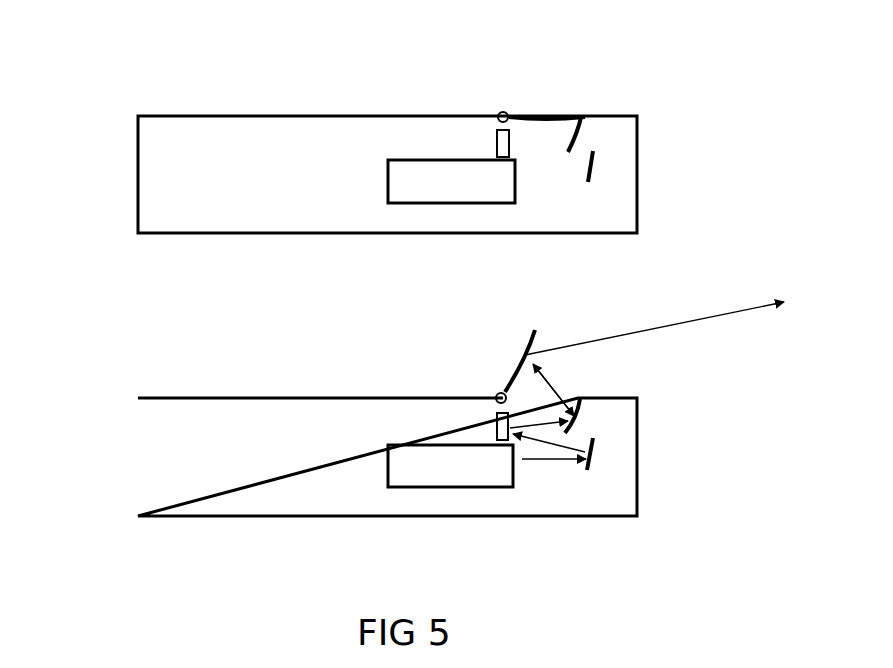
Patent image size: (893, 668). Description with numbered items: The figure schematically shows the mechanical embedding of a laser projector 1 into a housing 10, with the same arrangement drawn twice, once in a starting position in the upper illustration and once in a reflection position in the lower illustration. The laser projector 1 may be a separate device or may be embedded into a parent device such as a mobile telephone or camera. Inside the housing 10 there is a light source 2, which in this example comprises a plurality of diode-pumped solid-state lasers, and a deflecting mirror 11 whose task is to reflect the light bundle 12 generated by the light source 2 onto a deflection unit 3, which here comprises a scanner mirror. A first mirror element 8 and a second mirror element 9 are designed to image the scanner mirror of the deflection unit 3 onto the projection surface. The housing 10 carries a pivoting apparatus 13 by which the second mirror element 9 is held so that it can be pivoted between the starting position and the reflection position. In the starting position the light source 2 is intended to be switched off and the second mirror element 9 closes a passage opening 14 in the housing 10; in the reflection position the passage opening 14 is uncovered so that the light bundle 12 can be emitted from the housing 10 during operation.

The laser projector 1 is at (131, 70).
The light source 2 is at (450, 203).
The deflection unit 3 is at (470, 117).
The first mirror element 8 is at (603, 115).
The second mirror element 9 is at (548, 114).
The housing 10 is at (138, 168).
The deflecting mirror 11 is at (593, 168).
The light bundle 12 is at (550, 461).
The pivoting apparatus 13 is at (498, 393).
The passage opening 14 is at (542, 402).